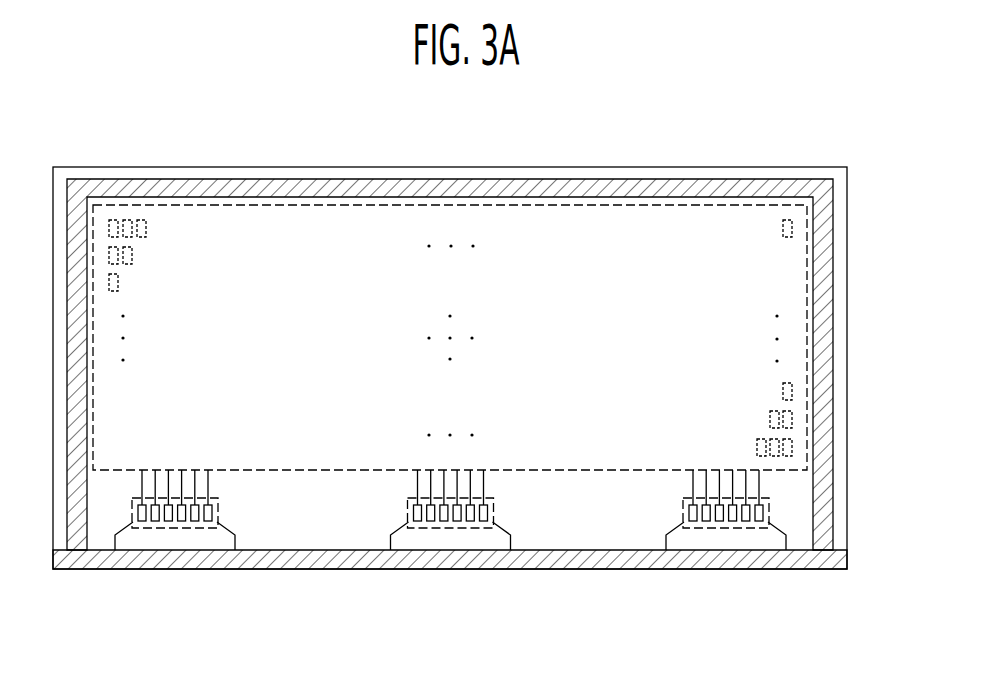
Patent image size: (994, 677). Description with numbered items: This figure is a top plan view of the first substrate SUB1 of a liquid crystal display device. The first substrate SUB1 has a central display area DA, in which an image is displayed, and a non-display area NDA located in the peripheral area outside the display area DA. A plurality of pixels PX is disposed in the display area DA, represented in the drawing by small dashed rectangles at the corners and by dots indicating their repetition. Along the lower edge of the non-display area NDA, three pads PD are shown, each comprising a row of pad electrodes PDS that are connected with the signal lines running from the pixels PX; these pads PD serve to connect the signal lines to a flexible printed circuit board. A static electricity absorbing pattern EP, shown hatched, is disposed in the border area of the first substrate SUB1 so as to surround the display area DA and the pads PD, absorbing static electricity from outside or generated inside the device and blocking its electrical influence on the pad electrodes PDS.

The first substrate SUB1 is at (847, 367).
The display area DA is at (450, 205).
The non-display area NDA is at (595, 530).
The pixel PX is at (110, 252).
The pad PD is at (147, 532).
The pad electrode PDS is at (192, 522).
The static electricity absorbing pattern EP is at (803, 570).